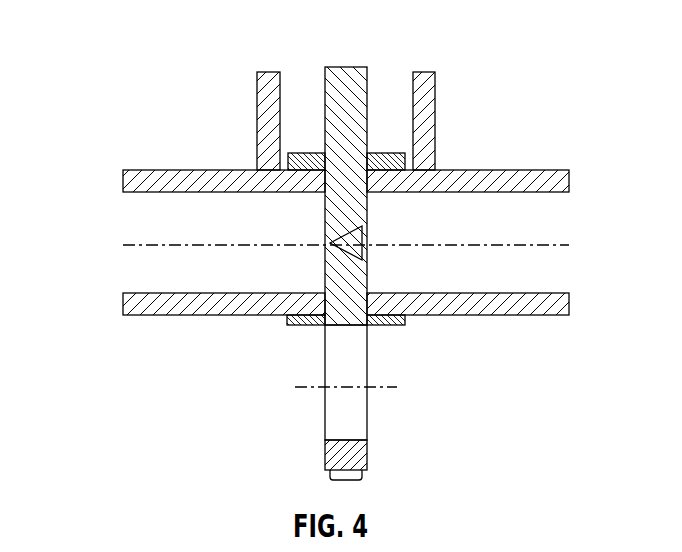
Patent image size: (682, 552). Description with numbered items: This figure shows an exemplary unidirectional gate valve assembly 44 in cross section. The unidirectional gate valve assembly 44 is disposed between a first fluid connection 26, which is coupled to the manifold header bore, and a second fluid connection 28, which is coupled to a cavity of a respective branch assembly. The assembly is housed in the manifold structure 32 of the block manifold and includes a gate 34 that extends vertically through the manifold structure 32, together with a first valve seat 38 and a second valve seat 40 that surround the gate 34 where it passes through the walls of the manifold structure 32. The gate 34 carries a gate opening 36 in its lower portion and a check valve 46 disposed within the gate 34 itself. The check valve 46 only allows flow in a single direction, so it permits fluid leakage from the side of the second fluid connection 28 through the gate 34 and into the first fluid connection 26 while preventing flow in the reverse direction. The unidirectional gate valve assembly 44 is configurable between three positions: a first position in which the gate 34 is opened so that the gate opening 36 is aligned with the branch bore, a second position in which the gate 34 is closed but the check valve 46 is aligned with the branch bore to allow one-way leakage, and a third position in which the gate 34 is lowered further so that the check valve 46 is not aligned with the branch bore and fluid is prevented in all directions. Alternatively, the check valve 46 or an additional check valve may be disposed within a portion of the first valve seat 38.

The unidirectional gate valve assembly 44 is at (112, 56).
The gate 34 is at (379, 253).
The second valve seat 40 is at (379, 153).
The manifold structure 32 is at (150, 170).
The first fluid connection 26 is at (130, 221).
The second fluid connection 28 is at (563, 222).
The check valve 46 is at (362, 250).
The first valve seat 38 is at (307, 321).
The gate opening 36 is at (367, 405).